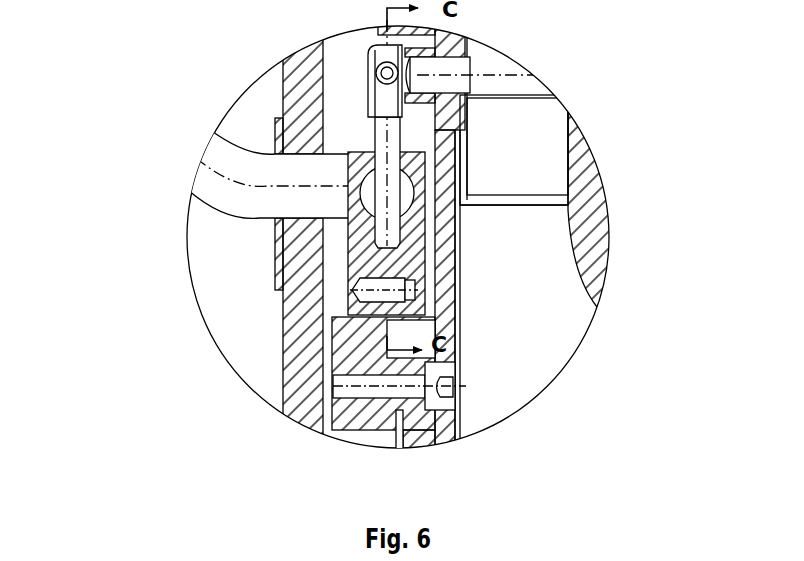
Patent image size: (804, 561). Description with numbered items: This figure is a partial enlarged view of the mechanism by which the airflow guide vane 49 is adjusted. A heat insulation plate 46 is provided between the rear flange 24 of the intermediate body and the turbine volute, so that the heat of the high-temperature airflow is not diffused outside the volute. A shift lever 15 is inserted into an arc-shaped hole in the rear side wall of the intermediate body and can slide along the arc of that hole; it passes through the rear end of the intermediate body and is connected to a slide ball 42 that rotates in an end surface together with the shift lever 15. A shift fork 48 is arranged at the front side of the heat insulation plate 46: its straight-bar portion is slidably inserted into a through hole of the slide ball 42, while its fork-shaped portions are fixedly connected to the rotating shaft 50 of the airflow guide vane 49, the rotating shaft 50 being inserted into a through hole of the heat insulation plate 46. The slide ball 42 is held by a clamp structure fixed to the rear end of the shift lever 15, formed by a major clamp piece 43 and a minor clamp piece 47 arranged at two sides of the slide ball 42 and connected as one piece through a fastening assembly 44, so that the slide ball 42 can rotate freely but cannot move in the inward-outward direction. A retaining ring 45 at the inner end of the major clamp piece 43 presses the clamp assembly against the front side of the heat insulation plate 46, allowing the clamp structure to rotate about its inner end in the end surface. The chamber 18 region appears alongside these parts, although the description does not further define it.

The shift lever 15 is at (232, 158).
The chamber 18 is at (525, 287).
The rear flange 24 is at (300, 116).
The slide ball 42 is at (352, 214).
The major clamp piece 43 is at (362, 228).
The fastening assembly 44 is at (358, 306).
The retaining ring 45 is at (345, 342).
The heat insulation plate 46 is at (457, 302).
The minor clamp piece 47 is at (412, 199).
The shift fork 48 is at (390, 125).
The airflow guide vane 49 is at (533, 147).
The rotating shaft 50 is at (450, 80).